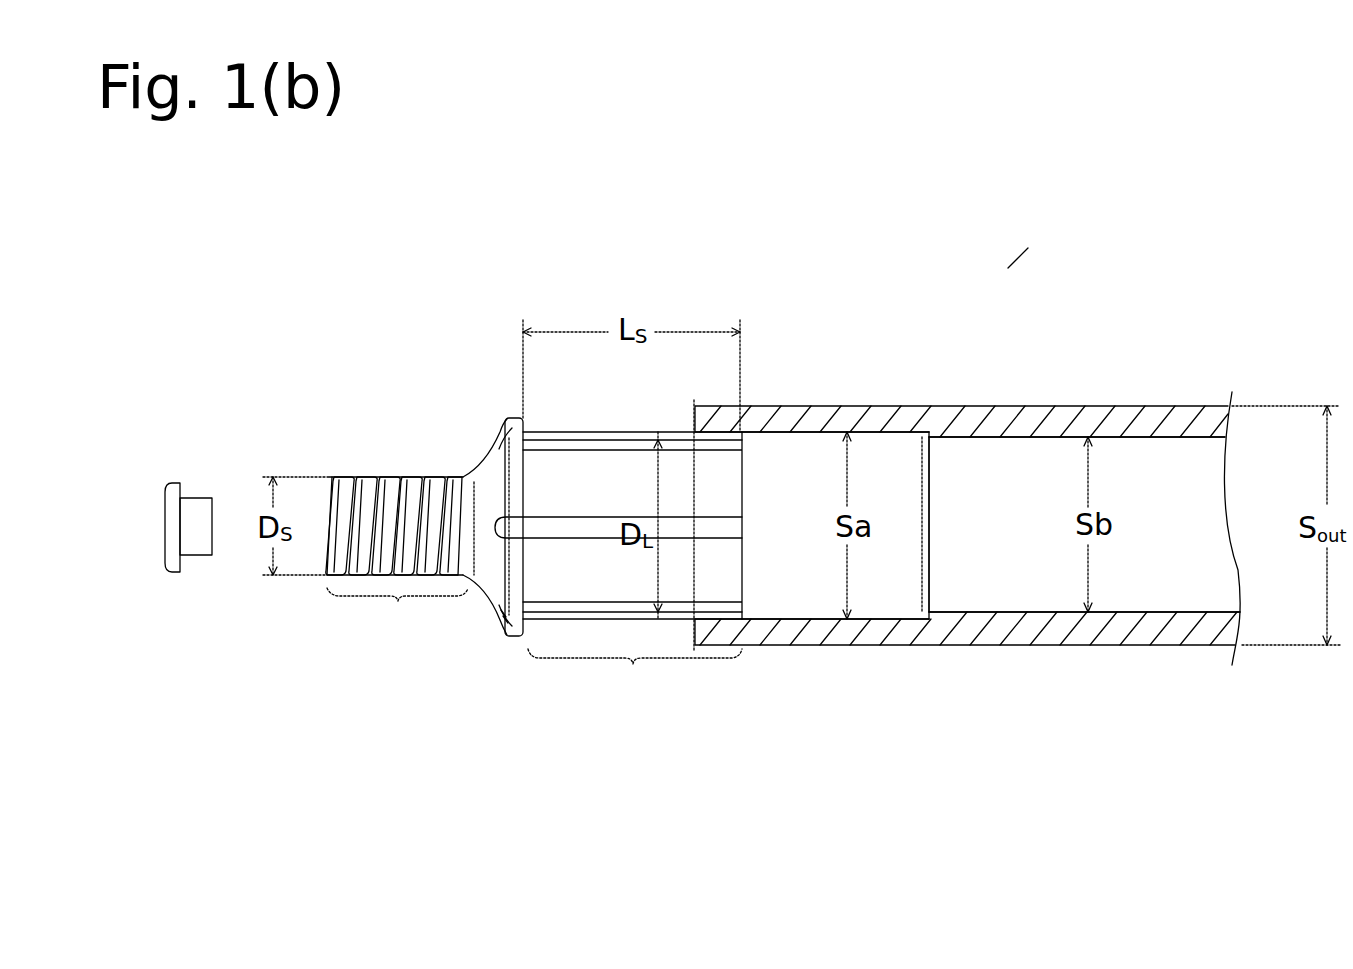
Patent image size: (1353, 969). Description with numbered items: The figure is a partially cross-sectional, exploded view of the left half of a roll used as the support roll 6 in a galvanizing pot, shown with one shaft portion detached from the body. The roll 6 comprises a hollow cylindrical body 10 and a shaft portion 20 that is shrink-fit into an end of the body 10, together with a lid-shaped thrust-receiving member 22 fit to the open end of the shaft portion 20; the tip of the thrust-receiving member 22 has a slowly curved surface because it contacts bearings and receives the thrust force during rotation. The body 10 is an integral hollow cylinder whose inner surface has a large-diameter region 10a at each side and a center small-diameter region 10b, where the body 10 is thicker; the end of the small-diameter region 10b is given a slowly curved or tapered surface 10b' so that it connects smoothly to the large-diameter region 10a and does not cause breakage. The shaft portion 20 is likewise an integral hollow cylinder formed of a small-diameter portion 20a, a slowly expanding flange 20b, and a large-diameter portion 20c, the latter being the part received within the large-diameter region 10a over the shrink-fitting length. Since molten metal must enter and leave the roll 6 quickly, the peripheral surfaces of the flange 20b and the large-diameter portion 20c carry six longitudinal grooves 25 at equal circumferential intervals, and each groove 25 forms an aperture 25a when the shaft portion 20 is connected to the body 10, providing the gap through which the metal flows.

The support roll 6 is at (1009, 267).
The hollow cylindrical body 10 is at (967, 479).
The large-diameter region 10a is at (805, 438).
The small-diameter region 10b is at (1084, 480).
The slowly curved or tapered surface 10b' is at (956, 524).
The shaft portion 20 is at (585, 540).
The small-diameter portion 20a is at (400, 560).
The slowly expanding flange 20b is at (502, 625).
The large-diameter portion 20c is at (632, 566).
The thrust-receiving member 22 is at (170, 485).
The longitudinal groove 25 is at (560, 526).
The aperture 25a is at (732, 525).